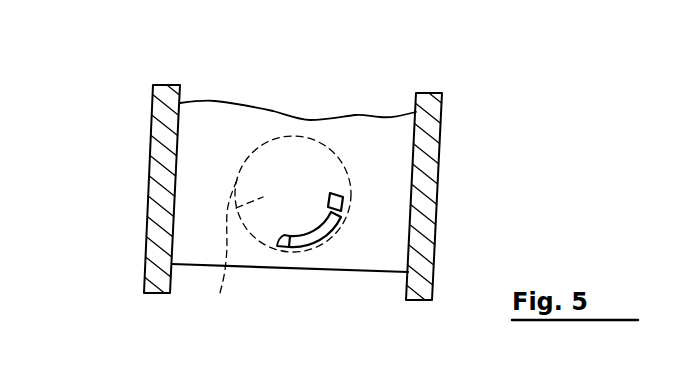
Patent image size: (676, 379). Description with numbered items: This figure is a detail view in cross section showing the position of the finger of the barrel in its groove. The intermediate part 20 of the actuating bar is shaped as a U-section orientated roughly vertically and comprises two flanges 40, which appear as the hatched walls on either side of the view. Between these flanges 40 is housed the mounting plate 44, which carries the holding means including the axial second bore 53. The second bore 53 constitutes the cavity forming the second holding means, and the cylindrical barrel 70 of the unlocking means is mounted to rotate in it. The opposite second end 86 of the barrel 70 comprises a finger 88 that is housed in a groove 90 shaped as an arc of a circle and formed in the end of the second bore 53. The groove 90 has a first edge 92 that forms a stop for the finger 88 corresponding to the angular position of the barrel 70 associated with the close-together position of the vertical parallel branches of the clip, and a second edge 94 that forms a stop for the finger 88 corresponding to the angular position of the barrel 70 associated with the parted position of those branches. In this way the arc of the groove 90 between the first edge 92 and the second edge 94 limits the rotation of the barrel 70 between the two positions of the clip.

The intermediate part 20 is at (443, 134).
The flanges 40 is at (166, 200).
The mounting plate 44 is at (364, 150).
The second bore 53 is at (262, 145).
The cylindrical barrel 70 is at (216, 252).
The second end 86 is at (310, 247).
The finger 88 is at (345, 205).
The groove 90 is at (320, 217).
The first edge 92 is at (343, 196).
The second edge 94 is at (277, 246).